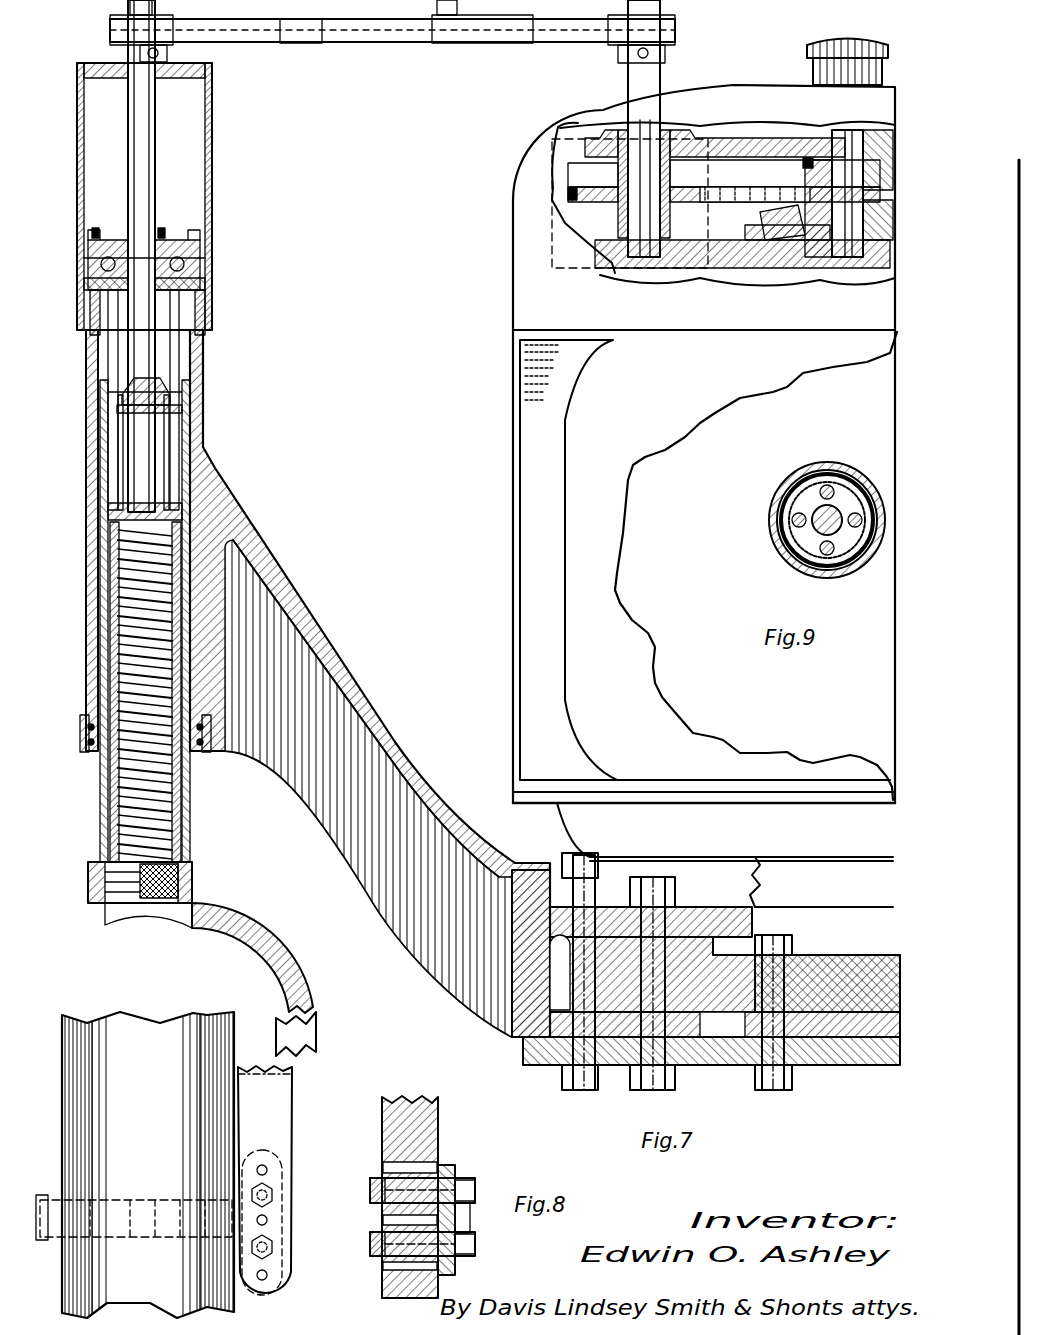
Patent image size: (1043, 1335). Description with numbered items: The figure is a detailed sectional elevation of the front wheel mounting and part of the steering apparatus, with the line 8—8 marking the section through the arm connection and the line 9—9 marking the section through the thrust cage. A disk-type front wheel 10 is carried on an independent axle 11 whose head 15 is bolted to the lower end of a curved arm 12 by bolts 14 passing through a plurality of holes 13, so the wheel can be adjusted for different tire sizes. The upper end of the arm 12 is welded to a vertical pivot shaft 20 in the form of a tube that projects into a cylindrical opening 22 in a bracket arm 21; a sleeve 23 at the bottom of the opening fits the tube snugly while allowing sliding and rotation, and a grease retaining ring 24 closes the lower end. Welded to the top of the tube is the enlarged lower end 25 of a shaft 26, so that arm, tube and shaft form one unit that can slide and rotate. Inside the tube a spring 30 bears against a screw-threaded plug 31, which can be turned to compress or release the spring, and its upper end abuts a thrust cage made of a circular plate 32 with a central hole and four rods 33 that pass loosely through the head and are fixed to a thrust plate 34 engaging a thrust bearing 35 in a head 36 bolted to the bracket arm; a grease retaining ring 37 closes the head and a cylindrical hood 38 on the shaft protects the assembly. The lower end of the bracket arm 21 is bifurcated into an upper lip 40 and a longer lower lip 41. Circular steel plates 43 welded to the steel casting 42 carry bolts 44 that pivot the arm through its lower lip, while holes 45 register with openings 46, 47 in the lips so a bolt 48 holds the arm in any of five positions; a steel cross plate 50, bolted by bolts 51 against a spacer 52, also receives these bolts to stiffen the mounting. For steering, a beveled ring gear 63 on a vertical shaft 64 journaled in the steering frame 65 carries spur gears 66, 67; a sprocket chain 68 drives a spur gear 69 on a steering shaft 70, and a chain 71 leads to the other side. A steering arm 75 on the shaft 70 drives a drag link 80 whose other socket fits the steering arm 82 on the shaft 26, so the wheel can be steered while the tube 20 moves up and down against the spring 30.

In FIG. 7, the section line 8— 8 is at (262, 1105).
In FIG. 7, the section line 9— 9 is at (88, 378).
In FIG. 7, the front wheel 10 is at (65, 1082).
In FIG. 7, the axle 11 is at (130, 1200).
In FIG. 8, the axle 11 is at (470, 1218).
In FIG. 7, the curved arm 12 is at (306, 1000).
In FIG. 8, the curved arm 12 is at (405, 1105).
In FIG. 7, the holes 13 is at (265, 1166).
In FIG. 8, the holes 13 is at (386, 1167).
In FIG. 7, the bolts 14 is at (272, 1192).
In FIG. 8, the bolts 14 is at (380, 1190).
In FIG. 7, the head 15 is at (278, 1165).
In FIG. 8, the head 15 is at (448, 1170).
In FIG. 7, the pivot shaft 20 is at (190, 826).
In FIG. 9, the pivot shaft 20 is at (830, 463).
In FIG. 7, the bracket arm 21 is at (360, 688).
In FIG. 7, the cylindrical opening 22 is at (197, 378).
In FIG. 9, the cylindrical opening 22 is at (785, 545).
In FIG. 7, the sleeve 23 is at (92, 656).
In FIG. 7, the grease retaining ring 24 is at (89, 750).
In FIG. 7, the enlarged lower end 25 is at (165, 405).
In FIG. 9, the enlarged lower end 25 is at (850, 540).
In FIG. 7, the shaft 26 is at (155, 172).
In FIG. 9, the shaft 26 is at (835, 508).
In FIG. 7, the spring 30 is at (112, 572).
In FIG. 7, the screw-threaded plug 31 is at (125, 905).
In FIG. 7, the circular plate 32 is at (125, 505).
In FIG. 7, the rods 33 is at (95, 325).
In FIG. 9, the rods 33 is at (822, 488).
In FIG. 7, the thrust plate 34 is at (205, 284).
In FIG. 7, the thrust bearing 35 is at (184, 262).
In FIG. 7, the head 36 is at (188, 235).
In FIG. 7, the grease retaining ring 37 is at (168, 234).
In FIG. 7, the cylindrical hood 38 is at (212, 120).
In FIG. 7, the upper lip 40 is at (615, 885).
In FIG. 7, the lower lip 41 is at (625, 1040).
In FIG. 7, the steel casting 42 is at (820, 972).
In FIG. 7, the circular steel plates 43 is at (692, 907).
In FIG. 7, the bolts 44 is at (650, 1055).
In FIG. 7, the holes 45 is at (528, 925).
In FIG. 7, the opening 46 is at (596, 880).
In FIG. 7, the opening 47 is at (600, 1025).
In FIG. 7, the bolt 48 is at (580, 978).
In FIG. 7, the steel cross plate 50 is at (840, 1065).
In FIG. 7, the bolts 51 is at (780, 1090).
In FIG. 7, the spacer 52 is at (885, 1030).
In FIG. 7, the beveled ring gear 63 is at (758, 224).
In FIG. 7, the vertical shaft 64 is at (847, 257).
In FIG. 7, the steering frame 65 is at (712, 270).
In FIG. 7, the spur gear 66 is at (815, 210).
In FIG. 7, the spur gear 67 is at (833, 172).
In FIG. 7, the sprocket chain 68 is at (748, 190).
In FIG. 7, the spur gear 69 is at (615, 200).
In FIG. 7, the steering shaft 70 is at (660, 82).
In FIG. 7, the chain 71 is at (832, 160).
In FIG. 7, the steering arm 75 is at (630, 60).
In FIG. 7, the drag link 80 is at (470, 43).
In FIG. 7, the steering arm 82 is at (140, 57).